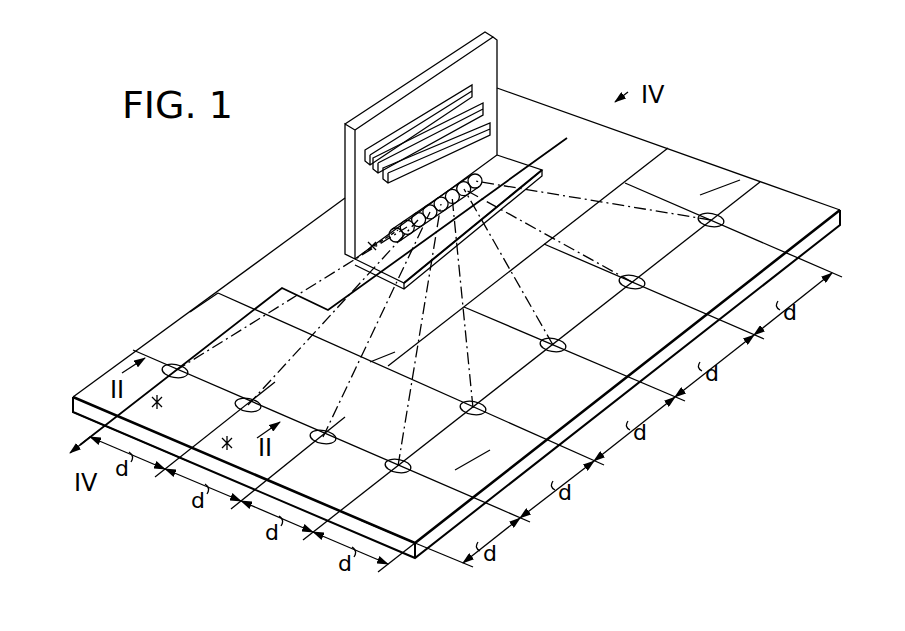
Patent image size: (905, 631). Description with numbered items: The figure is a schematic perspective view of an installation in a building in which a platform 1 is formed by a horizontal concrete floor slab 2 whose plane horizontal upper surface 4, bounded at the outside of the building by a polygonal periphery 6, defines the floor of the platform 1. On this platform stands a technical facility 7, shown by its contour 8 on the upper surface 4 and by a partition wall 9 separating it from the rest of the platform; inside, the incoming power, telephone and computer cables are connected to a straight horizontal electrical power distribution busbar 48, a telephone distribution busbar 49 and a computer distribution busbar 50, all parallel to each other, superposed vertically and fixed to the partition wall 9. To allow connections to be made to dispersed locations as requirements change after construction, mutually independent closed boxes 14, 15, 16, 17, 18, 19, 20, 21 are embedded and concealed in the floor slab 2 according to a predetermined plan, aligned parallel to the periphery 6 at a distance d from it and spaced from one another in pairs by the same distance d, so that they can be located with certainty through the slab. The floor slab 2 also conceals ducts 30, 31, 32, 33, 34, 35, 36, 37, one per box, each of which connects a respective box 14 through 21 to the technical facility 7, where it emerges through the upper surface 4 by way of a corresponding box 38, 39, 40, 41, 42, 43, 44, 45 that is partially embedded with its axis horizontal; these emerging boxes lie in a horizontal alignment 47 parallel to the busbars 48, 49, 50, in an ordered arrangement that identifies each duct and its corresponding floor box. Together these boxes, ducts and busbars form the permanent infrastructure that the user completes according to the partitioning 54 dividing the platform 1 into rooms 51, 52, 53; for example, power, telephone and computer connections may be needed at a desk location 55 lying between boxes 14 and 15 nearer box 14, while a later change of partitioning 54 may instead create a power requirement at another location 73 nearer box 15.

The platform 1 is at (165, 345).
The floor slab 2 is at (85, 408).
The upper surface 4 is at (466, 472).
The periphery 6 is at (392, 533).
The technical facility 7 is at (520, 163).
The contour 8 is at (456, 238).
The partition wall 9 is at (496, 42).
The box 14 is at (180, 378).
The box 15 is at (262, 405).
The box 16 is at (323, 444).
The box 17 is at (412, 466).
The box 18 is at (487, 408).
The box 19 is at (568, 345).
The box 20 is at (636, 290).
The box 21 is at (714, 228).
The duct 30 is at (240, 333).
The duct 31 is at (284, 370).
The duct 32 is at (348, 400).
The duct 33 is at (412, 382).
The duct 34 is at (470, 368).
The duct 35 is at (527, 298).
The duct 36 is at (600, 262).
The duct 37 is at (642, 200).
The box 38 is at (390, 231).
The box 39 is at (406, 221).
The box 40 is at (420, 227).
The box 41 is at (430, 205).
The box 42 is at (446, 209).
The box 43 is at (453, 190).
The box 44 is at (470, 187).
The box 45 is at (481, 177).
The alignment 47 is at (370, 246).
The electrical power distribution busbar 48 is at (420, 120).
The telephone distribution busbar 49 is at (484, 106).
The computer distribution busbar 50 is at (491, 124).
The room 51 is at (206, 308).
The room 52 is at (415, 552).
The room 53 is at (727, 185).
The partitioning 54 is at (385, 356).
The location 55 is at (157, 411).
The location 73 is at (236, 446).